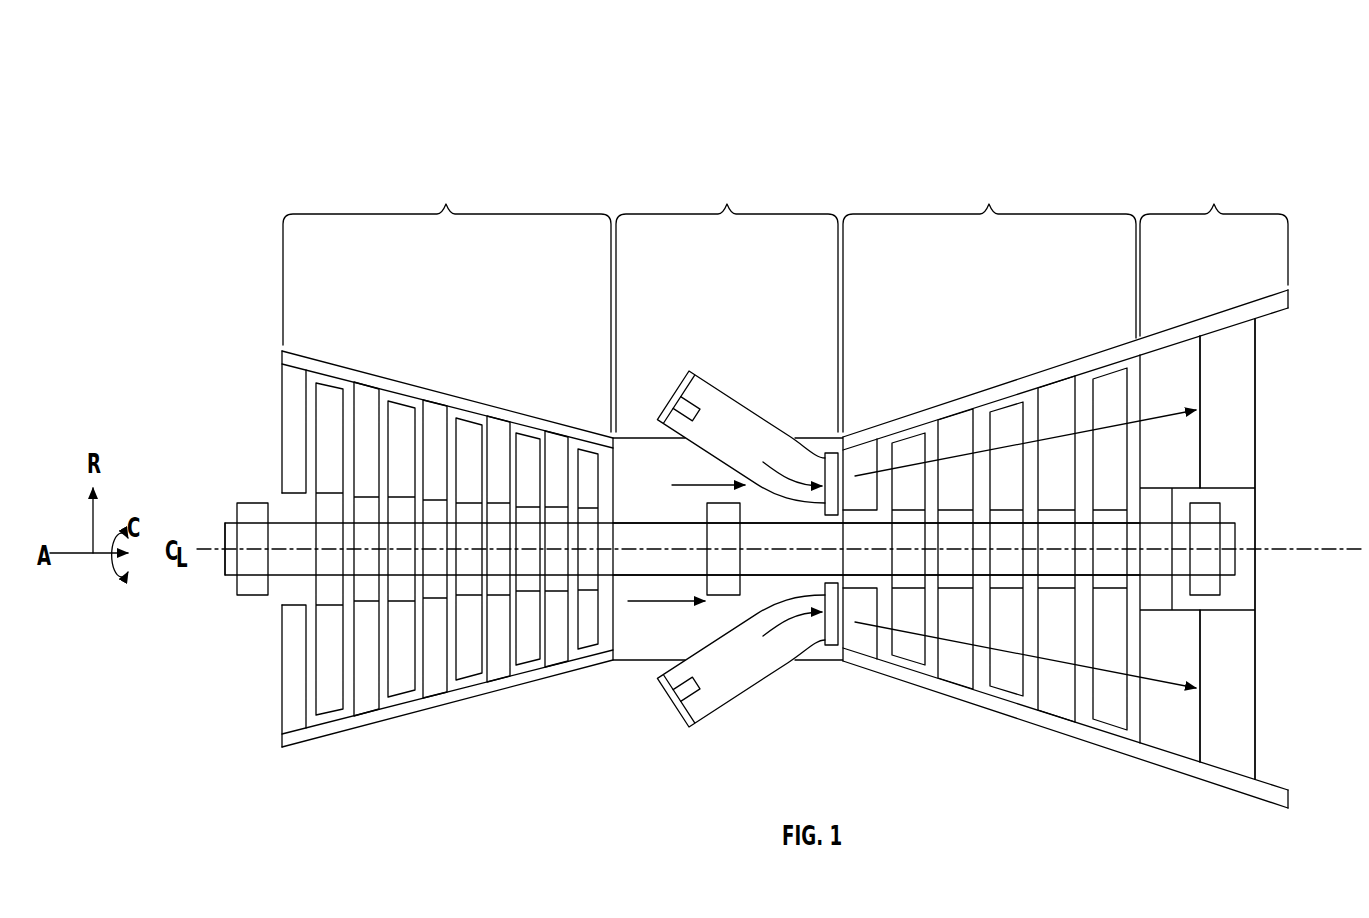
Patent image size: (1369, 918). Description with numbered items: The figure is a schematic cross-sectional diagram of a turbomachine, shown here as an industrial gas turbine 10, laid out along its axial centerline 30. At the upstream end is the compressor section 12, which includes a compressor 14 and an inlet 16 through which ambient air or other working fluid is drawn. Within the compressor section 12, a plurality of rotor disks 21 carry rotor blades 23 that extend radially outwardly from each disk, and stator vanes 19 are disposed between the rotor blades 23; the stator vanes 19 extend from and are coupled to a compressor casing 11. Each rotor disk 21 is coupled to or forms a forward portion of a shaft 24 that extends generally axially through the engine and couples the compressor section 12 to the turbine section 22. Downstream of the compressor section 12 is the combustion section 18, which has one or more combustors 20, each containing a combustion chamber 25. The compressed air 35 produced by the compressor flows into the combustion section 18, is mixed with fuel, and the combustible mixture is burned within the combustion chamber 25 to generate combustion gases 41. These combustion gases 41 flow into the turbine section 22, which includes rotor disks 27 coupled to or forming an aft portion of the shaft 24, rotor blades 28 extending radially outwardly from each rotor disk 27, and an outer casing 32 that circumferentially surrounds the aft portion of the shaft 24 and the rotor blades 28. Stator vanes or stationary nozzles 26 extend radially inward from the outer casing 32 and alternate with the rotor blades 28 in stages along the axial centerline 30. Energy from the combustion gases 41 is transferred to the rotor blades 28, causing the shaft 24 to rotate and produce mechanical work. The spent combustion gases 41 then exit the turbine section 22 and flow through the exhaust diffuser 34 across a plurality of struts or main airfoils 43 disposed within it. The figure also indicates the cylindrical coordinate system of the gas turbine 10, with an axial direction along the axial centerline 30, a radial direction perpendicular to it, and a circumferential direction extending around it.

The gas turbine 10 is at (1103, 170).
The compressor casing 11 is at (380, 383).
The compressor section 12 is at (447, 302).
The compressor 14 is at (337, 720).
The inlet 16 is at (282, 408).
The combustion section 18 is at (727, 302).
The stator vanes 19 is at (367, 692).
The combustor 20 is at (713, 712).
The rotor disks 21 is at (472, 585).
The turbine section 22 is at (989, 302).
The rotor blades 23 is at (467, 662).
The shaft 24 is at (652, 532).
The combustion chamber 25 is at (717, 667).
The stator vanes 26 is at (1057, 398).
The rotor disks 27 is at (902, 585).
The rotor blades 28 is at (1118, 720).
The axial centerline 30 is at (212, 542).
The outer casing 32 is at (1060, 733).
The exhaust diffuser 34 is at (1214, 254).
The compressed air 35 is at (647, 602).
The combustion gases 41 is at (1153, 681).
The struts or main airfoils 43 is at (1237, 706).